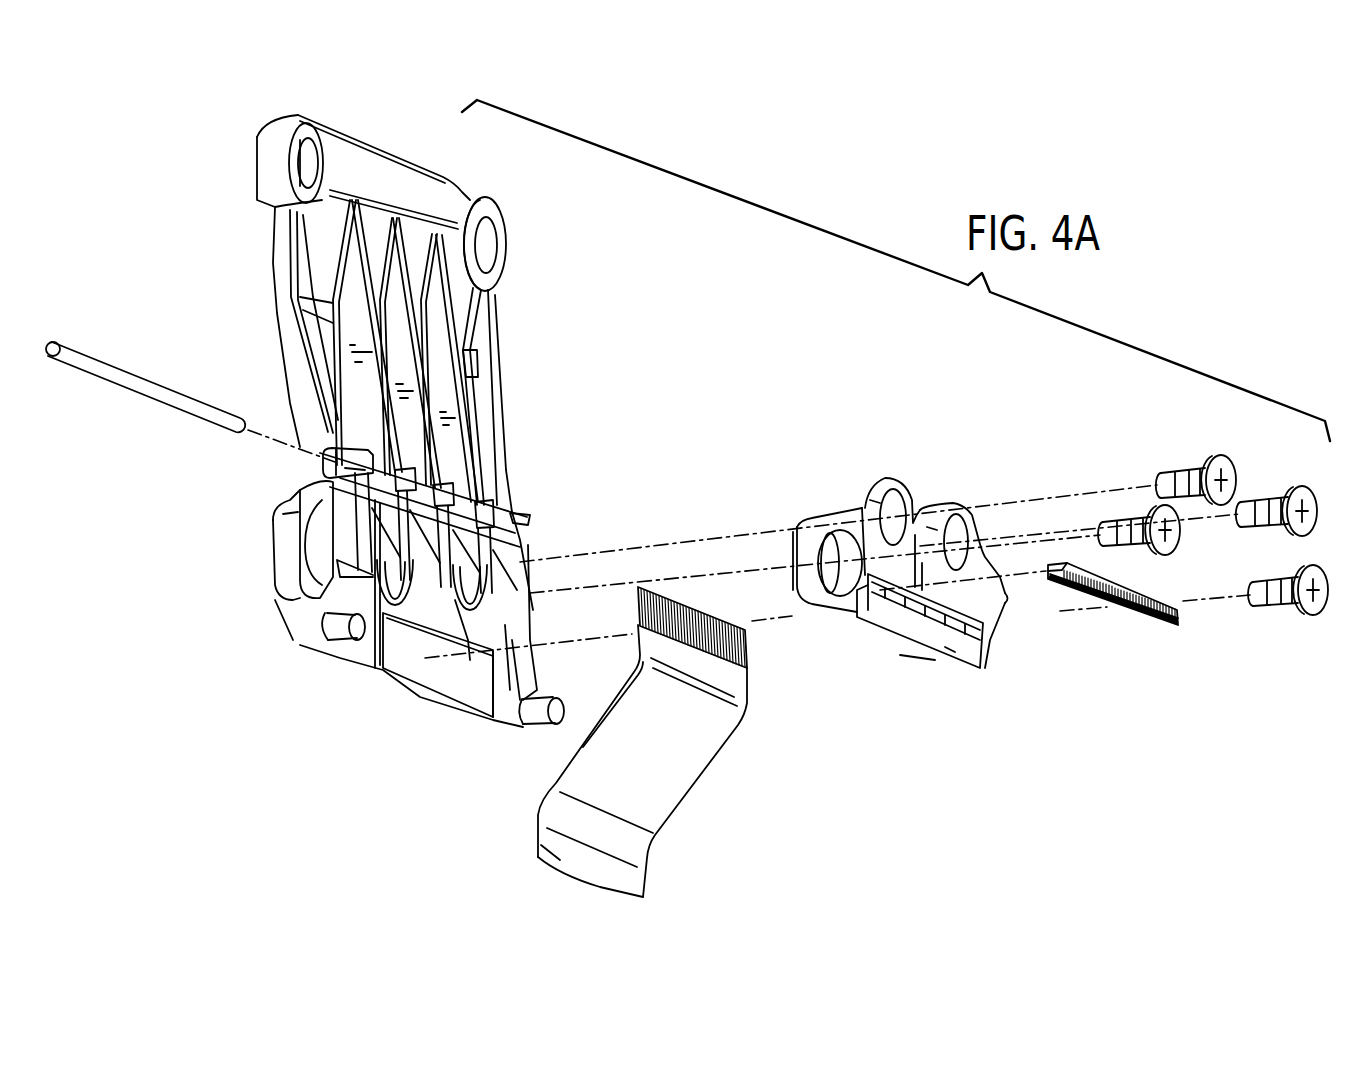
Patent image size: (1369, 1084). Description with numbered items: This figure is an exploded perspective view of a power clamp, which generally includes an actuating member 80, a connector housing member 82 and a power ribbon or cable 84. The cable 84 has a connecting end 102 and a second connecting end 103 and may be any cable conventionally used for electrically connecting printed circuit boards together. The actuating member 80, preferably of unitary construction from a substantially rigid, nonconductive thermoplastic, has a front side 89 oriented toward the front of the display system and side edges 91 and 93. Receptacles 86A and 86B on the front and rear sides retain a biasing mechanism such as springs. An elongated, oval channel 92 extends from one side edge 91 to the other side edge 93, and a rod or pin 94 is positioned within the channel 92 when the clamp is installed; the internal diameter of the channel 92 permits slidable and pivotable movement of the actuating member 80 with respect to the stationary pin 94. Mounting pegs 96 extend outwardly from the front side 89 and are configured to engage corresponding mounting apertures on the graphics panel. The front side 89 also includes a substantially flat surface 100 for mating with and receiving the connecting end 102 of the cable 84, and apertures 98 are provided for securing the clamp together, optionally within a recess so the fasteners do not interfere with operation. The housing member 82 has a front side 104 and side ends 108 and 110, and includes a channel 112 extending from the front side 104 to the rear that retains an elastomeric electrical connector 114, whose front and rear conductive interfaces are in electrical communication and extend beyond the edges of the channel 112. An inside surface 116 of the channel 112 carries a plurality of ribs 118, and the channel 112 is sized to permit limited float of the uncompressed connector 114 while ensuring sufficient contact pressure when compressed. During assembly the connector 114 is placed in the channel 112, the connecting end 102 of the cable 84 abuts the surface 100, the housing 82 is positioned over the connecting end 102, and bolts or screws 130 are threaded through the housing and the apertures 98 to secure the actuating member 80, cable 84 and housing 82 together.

The actuating member 80 is at (275, 243).
The connector housing member 82 is at (967, 647).
The power ribbon or cable 84 is at (627, 840).
The receptacle 86A is at (302, 167).
The receptacle 86B is at (270, 545).
The front side 89 is at (381, 170).
The side edge 91 is at (308, 465).
The elongated oval channel 92 is at (350, 467).
The side edge 93 is at (517, 513).
The rod or pin 94 is at (112, 366).
The mounting pegs 96 is at (338, 628).
The apertures 98 is at (462, 627).
The substantially flat surface 100 is at (412, 664).
The connecting end 102 is at (748, 640).
The connecting end 103 is at (586, 870).
The front side 104 is at (971, 598).
The side end 108 is at (800, 530).
The side end 110 is at (1005, 596).
The channel 112 is at (918, 610).
The elastomeric electrical connector 114 is at (1165, 625).
The inside surface 116 is at (910, 600).
The ribs 118 is at (903, 597).
The bolts or screws 130 is at (1185, 486).